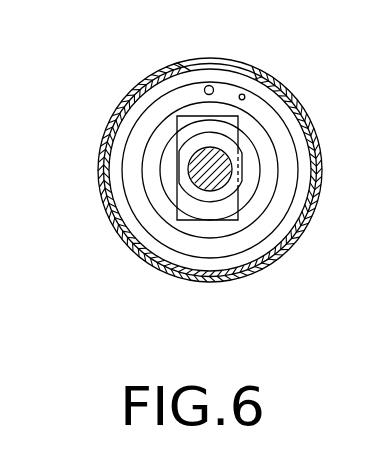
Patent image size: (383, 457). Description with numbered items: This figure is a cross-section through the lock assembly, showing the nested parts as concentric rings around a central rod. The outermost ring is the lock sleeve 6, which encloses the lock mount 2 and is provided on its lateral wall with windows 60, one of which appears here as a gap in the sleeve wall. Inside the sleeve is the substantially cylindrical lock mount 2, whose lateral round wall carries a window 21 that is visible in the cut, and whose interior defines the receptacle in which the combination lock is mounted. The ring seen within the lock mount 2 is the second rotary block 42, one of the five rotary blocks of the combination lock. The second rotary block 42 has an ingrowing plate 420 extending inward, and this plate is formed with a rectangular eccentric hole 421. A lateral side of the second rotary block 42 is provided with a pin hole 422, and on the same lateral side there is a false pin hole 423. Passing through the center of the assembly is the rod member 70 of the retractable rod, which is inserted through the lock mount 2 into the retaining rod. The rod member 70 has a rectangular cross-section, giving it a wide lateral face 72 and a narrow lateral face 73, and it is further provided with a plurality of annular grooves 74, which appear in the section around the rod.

The lock mount 2 is at (118, 194).
The lock sleeve 6 is at (120, 230).
The window 21 is at (203, 68).
The second rotary block 42 is at (272, 257).
The windows 60 is at (228, 65).
The rod member 70 is at (216, 178).
The wide lateral face 72 is at (248, 235).
The narrow lateral face 73 is at (186, 190).
The annular grooves 74 is at (213, 176).
The ingrowing plate 420 is at (160, 157).
The rectangular eccentric hole 421 is at (185, 127).
The pin hole 422 is at (205, 86).
The false pin hole 423 is at (246, 94).